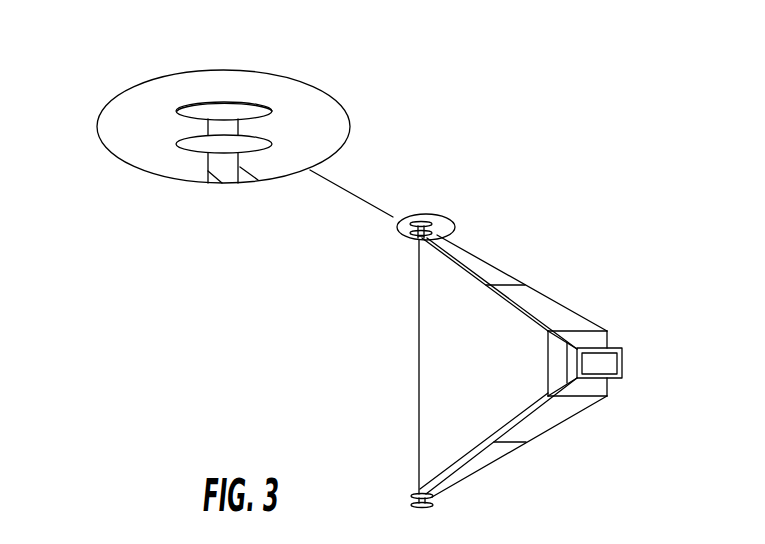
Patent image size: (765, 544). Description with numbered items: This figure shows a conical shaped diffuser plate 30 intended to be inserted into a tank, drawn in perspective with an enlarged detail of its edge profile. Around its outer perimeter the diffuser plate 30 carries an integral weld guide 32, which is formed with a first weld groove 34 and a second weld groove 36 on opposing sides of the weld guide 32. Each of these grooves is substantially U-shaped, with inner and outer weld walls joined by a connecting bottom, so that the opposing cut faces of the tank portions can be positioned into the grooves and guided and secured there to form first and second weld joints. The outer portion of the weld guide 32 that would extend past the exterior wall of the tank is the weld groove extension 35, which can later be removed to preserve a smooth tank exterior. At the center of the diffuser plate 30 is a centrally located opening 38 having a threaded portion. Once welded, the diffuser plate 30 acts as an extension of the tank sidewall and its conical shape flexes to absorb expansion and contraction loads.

The conical shaped diffuser plate 30 is at (500, 462).
The weld guide 32 is at (187, 105).
The first weld groove 34 is at (242, 128).
The weld groove extension 35 is at (268, 102).
The second weld groove 36 is at (205, 127).
The centrally located opening 38 is at (625, 358).